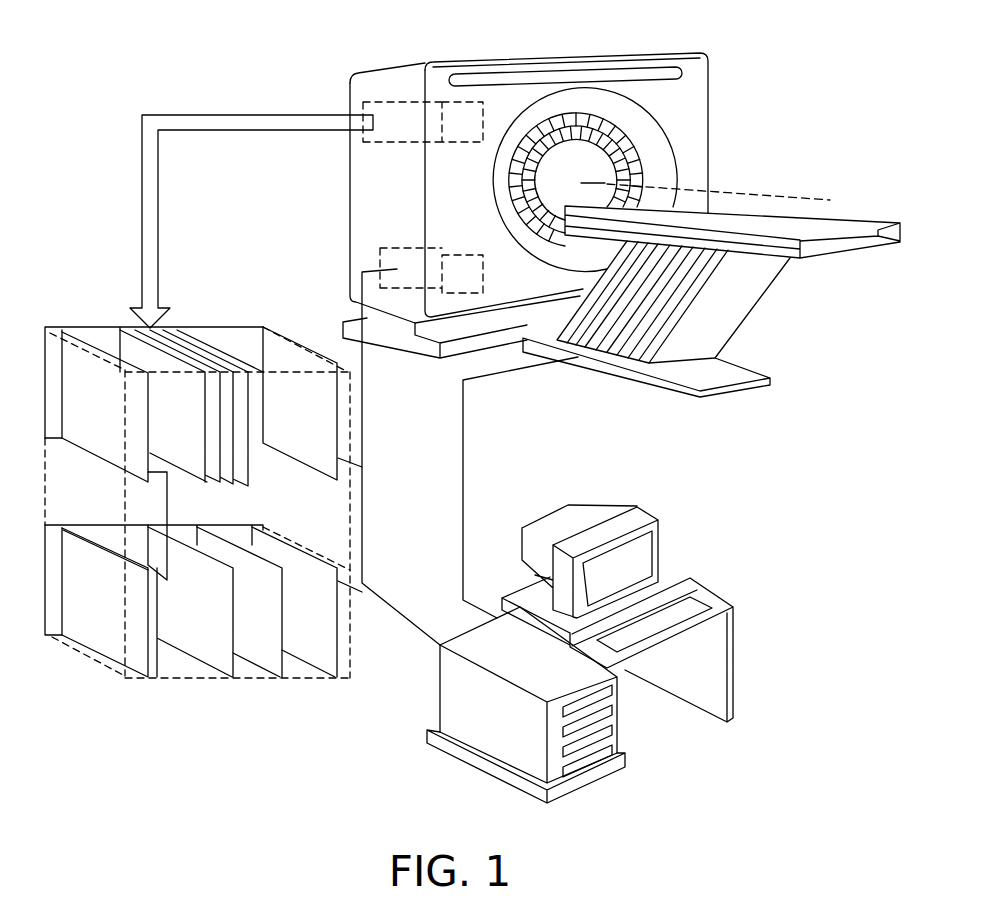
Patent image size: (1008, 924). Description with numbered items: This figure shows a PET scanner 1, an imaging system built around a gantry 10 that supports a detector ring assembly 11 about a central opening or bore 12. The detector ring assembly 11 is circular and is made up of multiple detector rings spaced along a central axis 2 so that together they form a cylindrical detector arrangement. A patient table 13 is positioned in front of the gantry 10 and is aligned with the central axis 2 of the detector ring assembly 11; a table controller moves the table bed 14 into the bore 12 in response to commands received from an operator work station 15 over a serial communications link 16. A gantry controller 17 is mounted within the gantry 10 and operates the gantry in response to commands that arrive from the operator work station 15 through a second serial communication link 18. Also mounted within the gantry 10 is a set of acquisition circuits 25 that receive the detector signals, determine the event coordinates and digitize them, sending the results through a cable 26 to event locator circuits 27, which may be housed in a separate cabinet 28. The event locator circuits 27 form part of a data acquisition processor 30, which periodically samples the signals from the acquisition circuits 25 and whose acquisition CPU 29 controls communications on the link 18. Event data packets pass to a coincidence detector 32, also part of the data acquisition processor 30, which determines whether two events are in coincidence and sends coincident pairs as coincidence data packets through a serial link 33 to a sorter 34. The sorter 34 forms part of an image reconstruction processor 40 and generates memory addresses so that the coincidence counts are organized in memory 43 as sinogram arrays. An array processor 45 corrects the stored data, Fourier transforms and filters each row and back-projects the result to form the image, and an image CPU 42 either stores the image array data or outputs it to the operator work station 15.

The PET scanner 1 is at (265, 82).
The central axis 2 is at (808, 195).
The gantry 10 is at (714, 107).
The detector ring assembly 11 is at (650, 149).
The bore 12 is at (631, 185).
The patient table 13 is at (758, 314).
The table bed 14 is at (838, 232).
The operator work station 15 is at (614, 491).
The serial communications link 16 is at (465, 442).
The gantry controller 17 is at (398, 245).
The second serial communication link 18 is at (362, 505).
The acquisition circuits 25 is at (380, 98).
The cable 26 is at (160, 270).
The event locator circuits 27 is at (166, 417).
The separate cabinet 28 is at (178, 680).
The acquisition CPU 29 is at (285, 417).
The data acquisition processor 30 is at (96, 322).
The coincidence detector 32 is at (80, 417).
The serial link 33 is at (168, 483).
The sorter 34 is at (80, 622).
The image reconstruction processor 40 is at (96, 520).
The image CPU 42 is at (293, 622).
The memory 43 is at (176, 622).
The array processor 45 is at (238, 622).